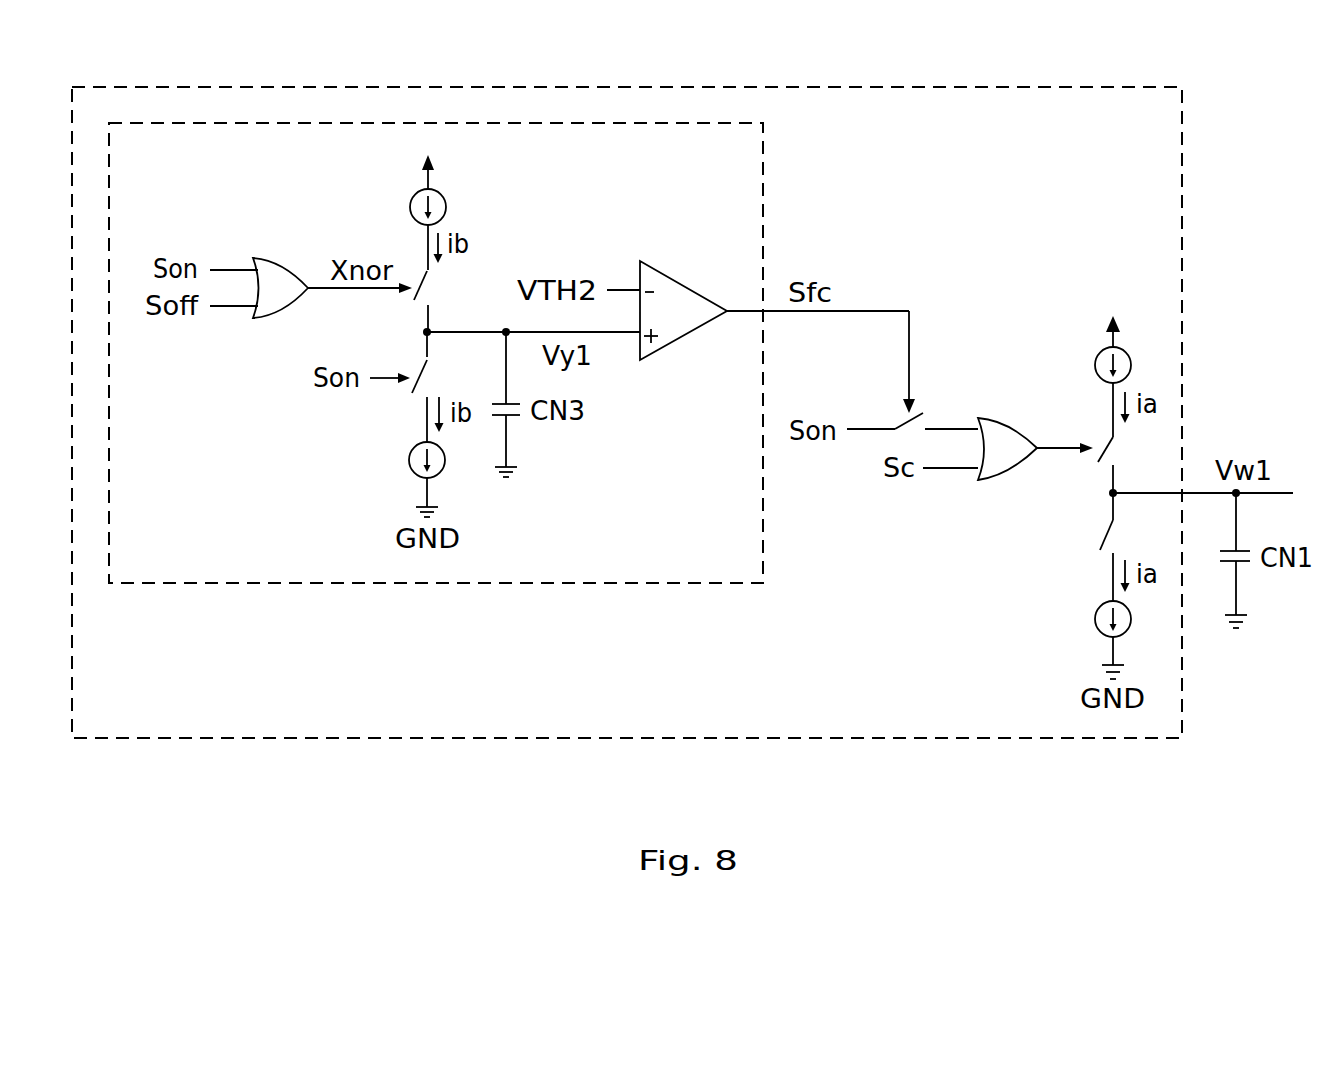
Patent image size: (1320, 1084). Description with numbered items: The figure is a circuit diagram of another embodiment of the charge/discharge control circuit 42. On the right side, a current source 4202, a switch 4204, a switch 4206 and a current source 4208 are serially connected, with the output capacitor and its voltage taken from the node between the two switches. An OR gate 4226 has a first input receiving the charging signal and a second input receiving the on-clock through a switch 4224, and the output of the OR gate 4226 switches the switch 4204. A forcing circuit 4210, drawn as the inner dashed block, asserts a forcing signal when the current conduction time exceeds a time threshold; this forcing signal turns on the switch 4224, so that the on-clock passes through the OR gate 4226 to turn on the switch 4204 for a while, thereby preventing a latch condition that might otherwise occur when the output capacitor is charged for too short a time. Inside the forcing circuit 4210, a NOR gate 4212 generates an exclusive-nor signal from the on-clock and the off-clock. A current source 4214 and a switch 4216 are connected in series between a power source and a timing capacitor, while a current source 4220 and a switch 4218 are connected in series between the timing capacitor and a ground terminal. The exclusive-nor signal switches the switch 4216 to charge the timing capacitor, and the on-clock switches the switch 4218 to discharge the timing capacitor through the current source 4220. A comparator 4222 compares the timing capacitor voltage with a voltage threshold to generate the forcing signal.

The charge/discharge control circuit 42 is at (638, 85).
The forcing circuit 4210 is at (423, 585).
The NOR gate 4212 is at (280, 319).
The current source 4214 is at (410, 194).
The switch 4216 is at (407, 265).
The switch 4218 is at (407, 355).
The current source 4220 is at (409, 467).
The comparator 4222 is at (682, 338).
The switch 4224 is at (960, 387).
The OR gate 4226 is at (998, 483).
The current source 4202 is at (1096, 365).
The switch 4204 is at (1094, 426).
The switch 4206 is at (1083, 542).
The current source 4208 is at (1095, 617).